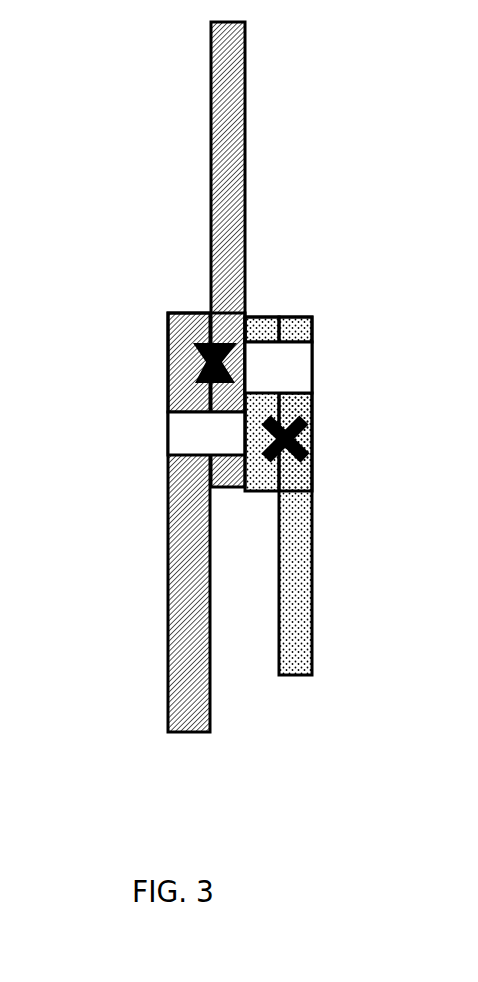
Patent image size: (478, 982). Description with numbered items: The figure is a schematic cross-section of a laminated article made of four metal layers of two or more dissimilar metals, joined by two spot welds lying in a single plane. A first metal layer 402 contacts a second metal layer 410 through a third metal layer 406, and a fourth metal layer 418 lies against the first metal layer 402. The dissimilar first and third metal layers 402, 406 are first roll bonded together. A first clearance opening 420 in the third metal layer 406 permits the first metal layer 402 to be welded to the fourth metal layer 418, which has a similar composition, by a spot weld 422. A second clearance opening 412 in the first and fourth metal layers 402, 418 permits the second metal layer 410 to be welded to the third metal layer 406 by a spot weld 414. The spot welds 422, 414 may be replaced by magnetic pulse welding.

The first metal layer 402 is at (247, 54).
The third metal layer 406 is at (263, 315).
The second metal layer 410 is at (303, 315).
The second clearance opening 412 is at (175, 438).
The spot weld 414 is at (306, 430).
The fourth metal layer 418 is at (170, 603).
The first clearance opening 420 is at (303, 370).
The spot weld 422 is at (180, 363).